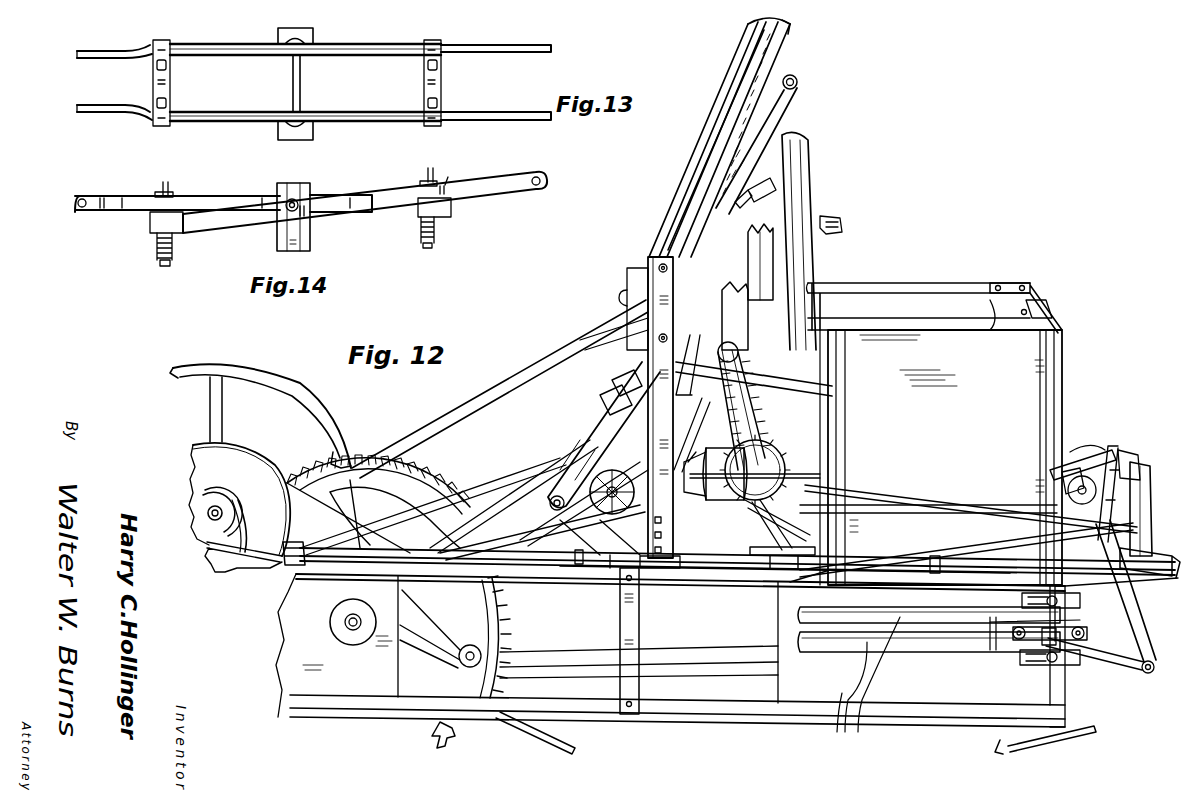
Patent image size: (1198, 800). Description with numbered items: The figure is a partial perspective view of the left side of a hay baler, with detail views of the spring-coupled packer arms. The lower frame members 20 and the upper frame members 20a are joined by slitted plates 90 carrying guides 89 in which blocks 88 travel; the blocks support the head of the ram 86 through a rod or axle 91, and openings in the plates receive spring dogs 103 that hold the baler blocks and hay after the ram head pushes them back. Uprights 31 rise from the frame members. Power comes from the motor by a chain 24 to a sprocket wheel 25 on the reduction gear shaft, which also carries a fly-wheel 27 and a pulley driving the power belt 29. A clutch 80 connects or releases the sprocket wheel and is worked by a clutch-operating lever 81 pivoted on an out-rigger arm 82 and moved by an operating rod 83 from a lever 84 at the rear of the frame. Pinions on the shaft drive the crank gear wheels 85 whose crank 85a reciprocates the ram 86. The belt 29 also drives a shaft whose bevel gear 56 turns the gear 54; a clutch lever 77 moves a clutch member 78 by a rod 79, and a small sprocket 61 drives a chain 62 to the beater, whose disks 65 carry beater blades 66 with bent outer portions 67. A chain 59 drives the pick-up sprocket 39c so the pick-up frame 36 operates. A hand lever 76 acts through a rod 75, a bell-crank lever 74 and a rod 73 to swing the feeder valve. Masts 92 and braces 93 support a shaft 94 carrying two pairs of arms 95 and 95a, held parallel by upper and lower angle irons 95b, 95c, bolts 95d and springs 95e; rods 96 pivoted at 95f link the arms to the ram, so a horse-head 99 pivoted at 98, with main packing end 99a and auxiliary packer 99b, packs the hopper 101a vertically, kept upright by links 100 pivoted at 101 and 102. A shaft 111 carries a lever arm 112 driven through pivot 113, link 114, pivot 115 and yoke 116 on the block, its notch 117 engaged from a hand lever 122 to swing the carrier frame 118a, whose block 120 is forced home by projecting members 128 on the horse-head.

In FIG. 12, the frame members 20 is at (730, 712).
In FIG. 12, the upper frame members 20a is at (728, 580).
In FIG. 12, the chain 24 is at (274, 478).
In FIG. 12, the wheel 25 is at (232, 462).
In FIG. 12, the fly-wheel 27 is at (296, 396).
In FIG. 12, the power belt 29 is at (478, 492).
In FIG. 12, the uprights 31 is at (636, 616).
In FIG. 12, the pick-up frame 36 is at (522, 395).
In FIG. 12, the sprocket wheel 39c is at (700, 346).
In FIG. 12, the gear 54 is at (758, 466).
In FIG. 12, the bevel gear 56 is at (684, 470).
In FIG. 12, the chain 59 is at (604, 490).
In FIG. 12, the small sprocket 61 is at (762, 440).
In FIG. 12, the chain 62 is at (758, 422).
In FIG. 12, the disks 65 is at (992, 300).
In FIG. 12, the beater blades 66 is at (950, 328).
In FIG. 12, the bent outer portions of beater blades 67 is at (928, 306).
In FIG. 12, the rod 73 is at (790, 528).
In FIG. 12, the bell-crank lever 74 is at (798, 544).
In FIG. 12, the rod 75 is at (950, 548).
In FIG. 12, the hand lever 76 is at (1145, 492).
In FIG. 12, the clutch lever 77 is at (766, 510).
In FIG. 12, the clutch member 78 is at (770, 474).
In FIG. 12, the rod 79 is at (946, 484).
In FIG. 12, the clutch 80 is at (228, 500).
In FIG. 12, the clutch-operating lever 81 is at (244, 525).
In FIG. 12, the out-rigger arm 82 is at (356, 538).
In FIG. 12, the operating rod 83 is at (362, 574).
In FIG. 12, the lever 84 is at (1140, 598).
In FIG. 12, the crank gear wheels 85 is at (506, 634).
In FIG. 12, the crank 85a is at (472, 646).
In FIG. 12, the ram 86 is at (710, 652).
In FIG. 12, the blocks 88 is at (1002, 648).
In FIG. 12, the guides 89 is at (879, 688).
In FIG. 12, the slitted plates 90 is at (836, 701).
In FIG. 12, the rod or axle 91 is at (990, 636).
In FIG. 13, the masts 92 is at (314, 30).
In FIG. 14, the masts 92 is at (302, 240).
In FIG. 12, the masts 92 is at (640, 300).
In FIG. 12, the braces 93 is at (548, 445).
In FIG. 12, the shaft 94 is at (640, 334).
In FIG. 13, the arms 95 is at (110, 64).
In FIG. 14, the arms 95 is at (124, 212).
In FIG. 12, the arms 95 is at (580, 452).
In FIG. 13, the arms 95a is at (490, 112).
In FIG. 14, the arms 95a is at (198, 220).
In FIG. 12, the arms 95a is at (760, 130).
In FIG. 13, the angle irons 95b is at (236, 82).
In FIG. 14, the angle irons 95b is at (188, 182).
In FIG. 12, the angle irons 95b is at (604, 400).
In FIG. 14, the angle irons 95c is at (180, 233).
In FIG. 12, the angle irons 95c is at (618, 388).
In FIG. 13, the bolts 95d is at (155, 66).
In FIG. 14, the bolts 95d is at (168, 264).
In FIG. 14, the springs 95e is at (157, 244).
In FIG. 12, the springs 95e is at (776, 192).
In FIG. 12, the pivot connection 95f is at (560, 488).
In FIG. 12, the rods 96 is at (590, 526).
In FIG. 13, the pivot 98 is at (300, 84).
In FIG. 14, the pivot 98 is at (298, 198).
In FIG. 12, the pivot 98 is at (800, 84).
In FIG. 12, the horse-head 99 is at (795, 130).
In FIG. 12, the main packing end 99a is at (820, 300).
In FIG. 12, the auxiliary packer 99b is at (782, 264).
In FIG. 12, the links 100 is at (708, 168).
In FIG. 12, the pivot point 101 is at (645, 262).
In FIG. 12, the hopper 101a is at (815, 370).
In FIG. 12, the pivot point 102 is at (768, 20).
In FIG. 12, the spring dogs 103 is at (1018, 599).
In FIG. 12, the shaft 111 is at (1060, 549).
In FIG. 12, the lever arm 112 is at (1160, 556).
In FIG. 12, the pivot 113 is at (1154, 668).
In FIG. 12, the link 114 is at (1126, 662).
In FIG. 12, the pivot 115 is at (1048, 632).
In FIG. 12, the yoke 116 is at (1012, 636).
In FIG. 12, the notch 117 is at (1062, 462).
In FIG. 12, the carrier frame 118a is at (1074, 456).
In FIG. 12, the block 120 is at (1100, 456).
In FIG. 12, the hand lever 122 is at (1140, 470).
In FIG. 12, the projecting members 128 is at (832, 236).